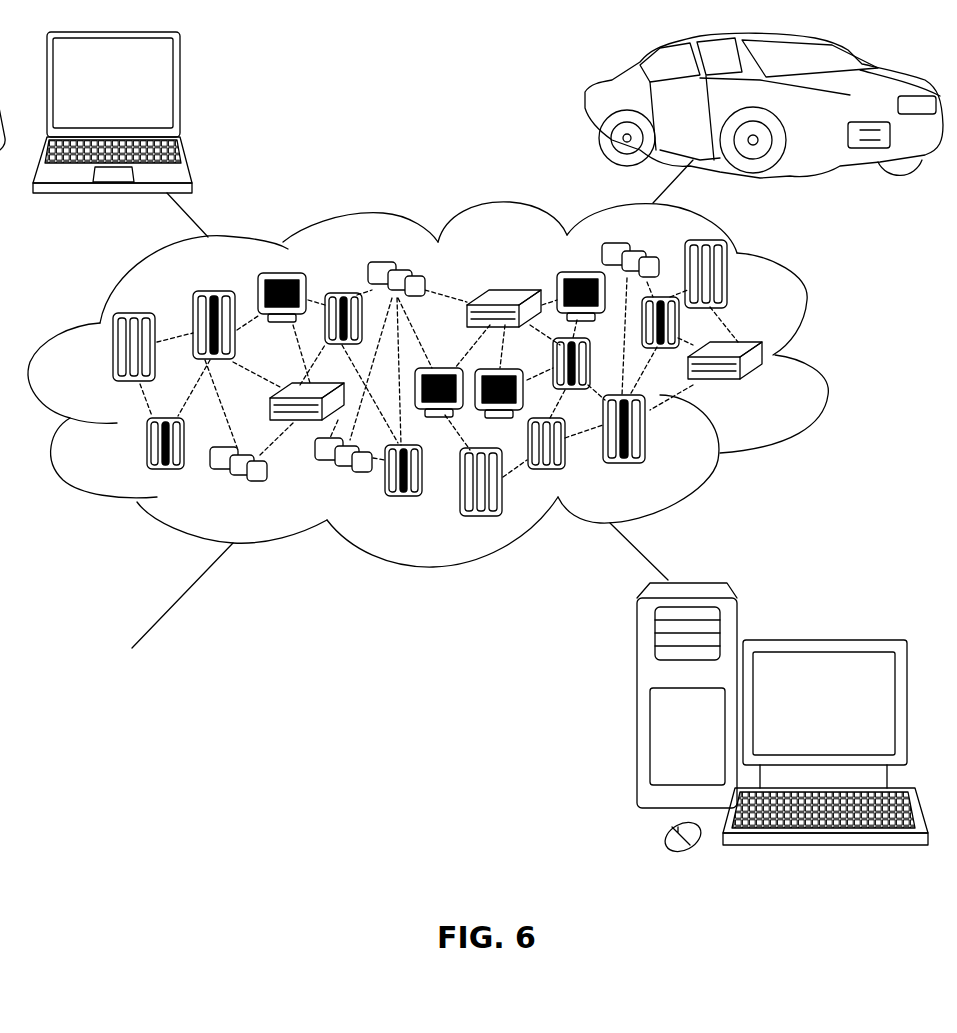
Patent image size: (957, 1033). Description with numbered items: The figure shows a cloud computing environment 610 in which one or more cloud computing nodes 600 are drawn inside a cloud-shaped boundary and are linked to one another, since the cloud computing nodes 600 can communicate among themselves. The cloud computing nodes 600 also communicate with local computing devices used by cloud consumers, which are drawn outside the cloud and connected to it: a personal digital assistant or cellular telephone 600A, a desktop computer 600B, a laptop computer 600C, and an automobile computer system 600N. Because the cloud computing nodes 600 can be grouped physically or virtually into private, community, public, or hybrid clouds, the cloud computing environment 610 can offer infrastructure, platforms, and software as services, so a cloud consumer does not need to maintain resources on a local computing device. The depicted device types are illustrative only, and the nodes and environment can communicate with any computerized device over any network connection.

The cloud computing nodes 600 is at (765, 384).
The cloud computing environment 610 is at (829, 353).
The personal digital assistant (PDA) or cellular telephone 600A is at (173, 732).
The desktop computer 600B is at (820, 640).
The laptop computer 600C is at (180, 92).
The automobile computer system 600N is at (605, 110).